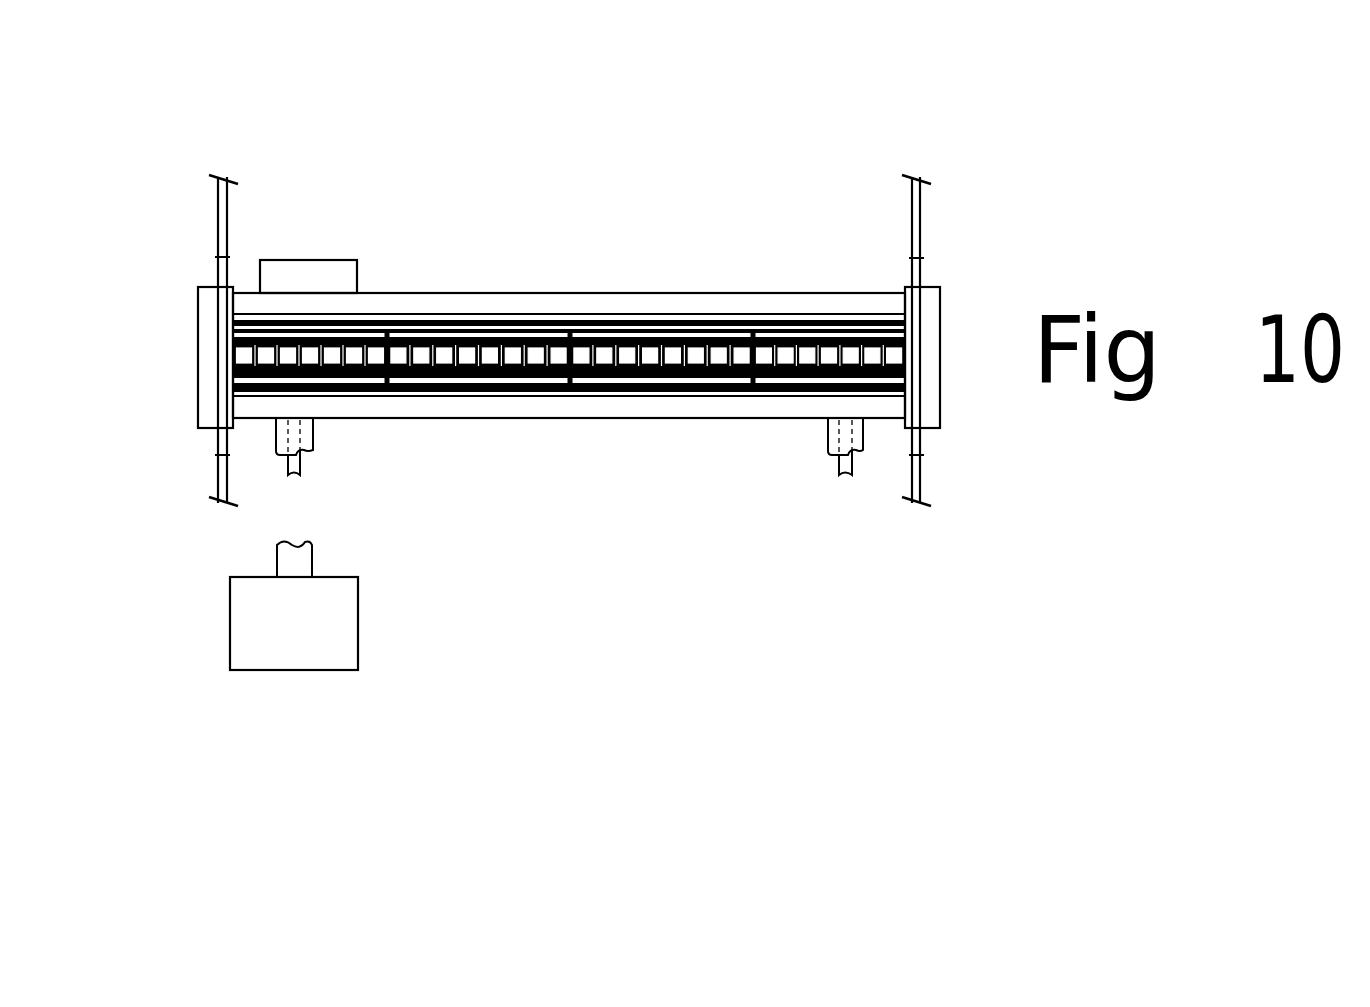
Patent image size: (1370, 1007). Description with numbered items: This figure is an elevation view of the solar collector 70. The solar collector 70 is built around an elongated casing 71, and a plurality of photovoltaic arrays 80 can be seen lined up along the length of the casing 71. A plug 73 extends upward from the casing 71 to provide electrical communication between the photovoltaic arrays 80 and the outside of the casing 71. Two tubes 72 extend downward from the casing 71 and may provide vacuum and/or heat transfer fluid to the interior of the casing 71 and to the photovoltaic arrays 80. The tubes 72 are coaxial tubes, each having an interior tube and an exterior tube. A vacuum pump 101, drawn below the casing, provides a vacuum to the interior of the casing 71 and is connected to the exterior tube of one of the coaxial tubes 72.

The solar collector 70 is at (528, 432).
The casing 71 is at (792, 294).
The tubes 72 is at (323, 452).
The plug 73 is at (330, 260).
The photovoltaic arrays 80 is at (833, 343).
The vacuum pump 101 is at (250, 678).